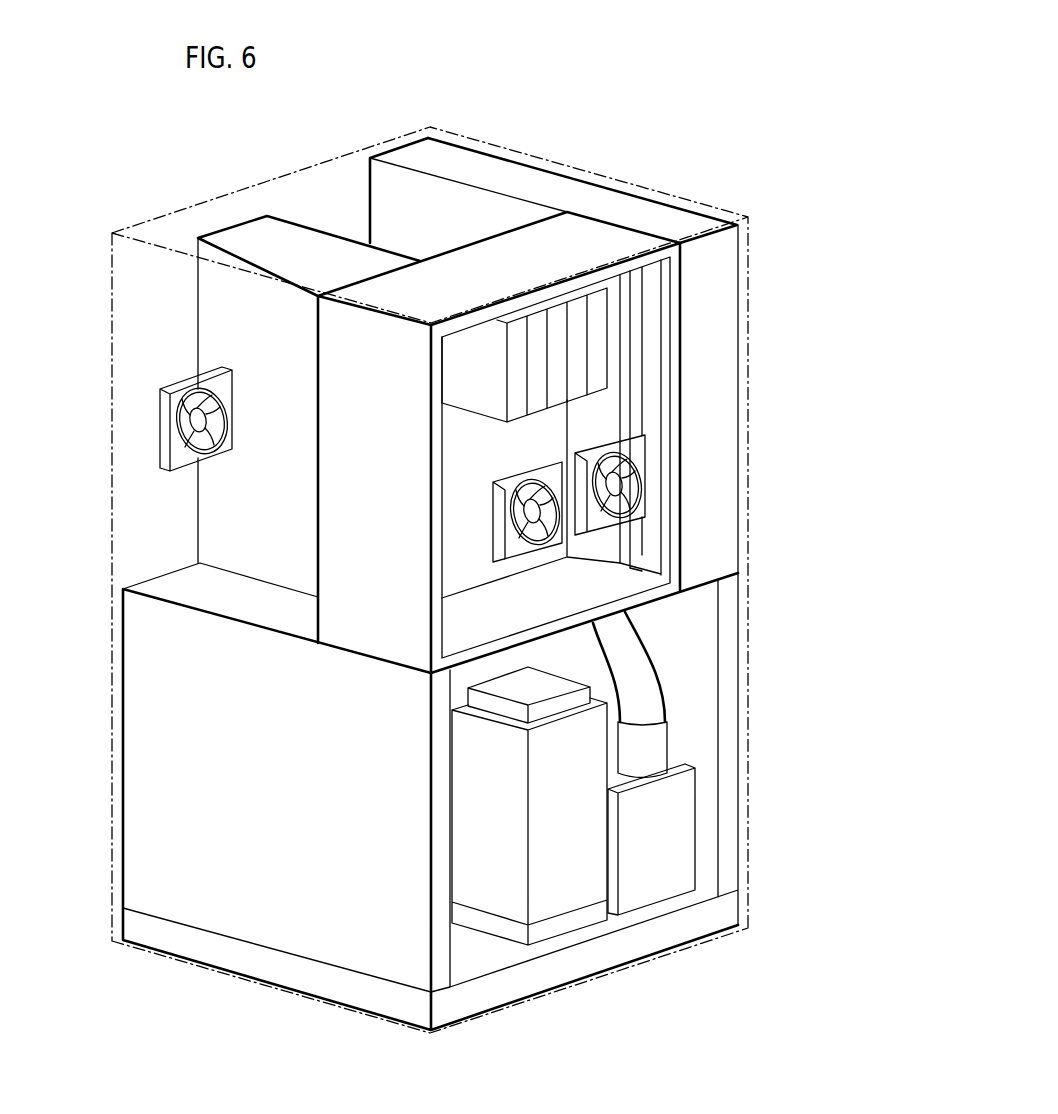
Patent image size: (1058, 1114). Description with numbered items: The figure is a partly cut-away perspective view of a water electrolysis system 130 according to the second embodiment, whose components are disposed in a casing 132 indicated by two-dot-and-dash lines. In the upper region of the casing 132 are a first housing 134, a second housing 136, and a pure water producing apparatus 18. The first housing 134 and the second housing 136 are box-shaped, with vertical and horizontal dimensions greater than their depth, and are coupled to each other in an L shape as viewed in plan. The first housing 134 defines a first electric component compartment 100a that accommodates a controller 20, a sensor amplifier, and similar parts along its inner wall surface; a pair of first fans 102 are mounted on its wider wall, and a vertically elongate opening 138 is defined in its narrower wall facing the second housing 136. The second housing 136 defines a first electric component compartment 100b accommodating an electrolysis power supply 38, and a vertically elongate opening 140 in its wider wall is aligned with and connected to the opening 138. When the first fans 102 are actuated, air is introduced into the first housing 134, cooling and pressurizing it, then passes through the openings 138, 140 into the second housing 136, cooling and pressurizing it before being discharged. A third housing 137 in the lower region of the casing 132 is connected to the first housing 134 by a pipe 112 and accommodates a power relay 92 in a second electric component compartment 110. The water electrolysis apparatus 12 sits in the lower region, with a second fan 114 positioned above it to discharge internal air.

The water electrolysis apparatus 12 is at (573, 908).
The pure water producing apparatus 18 is at (426, 242).
The controller 20 is at (583, 343).
The electrolysis power supply 38 is at (715, 270).
The power relay 92 is at (665, 857).
The first electric component compartment 100a is at (467, 512).
The first electric component compartment 100b is at (553, 168).
The first fans 102 is at (550, 508).
The second electric component compartment 110 is at (743, 850).
The pipe 112 is at (630, 668).
The second fan 114 is at (173, 420).
The water electrolysis system 130 is at (583, 111).
The casing 132 is at (103, 734).
The first housing 134 is at (607, 236).
The second housing 136 is at (662, 192).
The third housing 137 is at (738, 839).
The vertically elongate opening 138 is at (751, 417).
The vertically elongate opening 140 is at (650, 375).